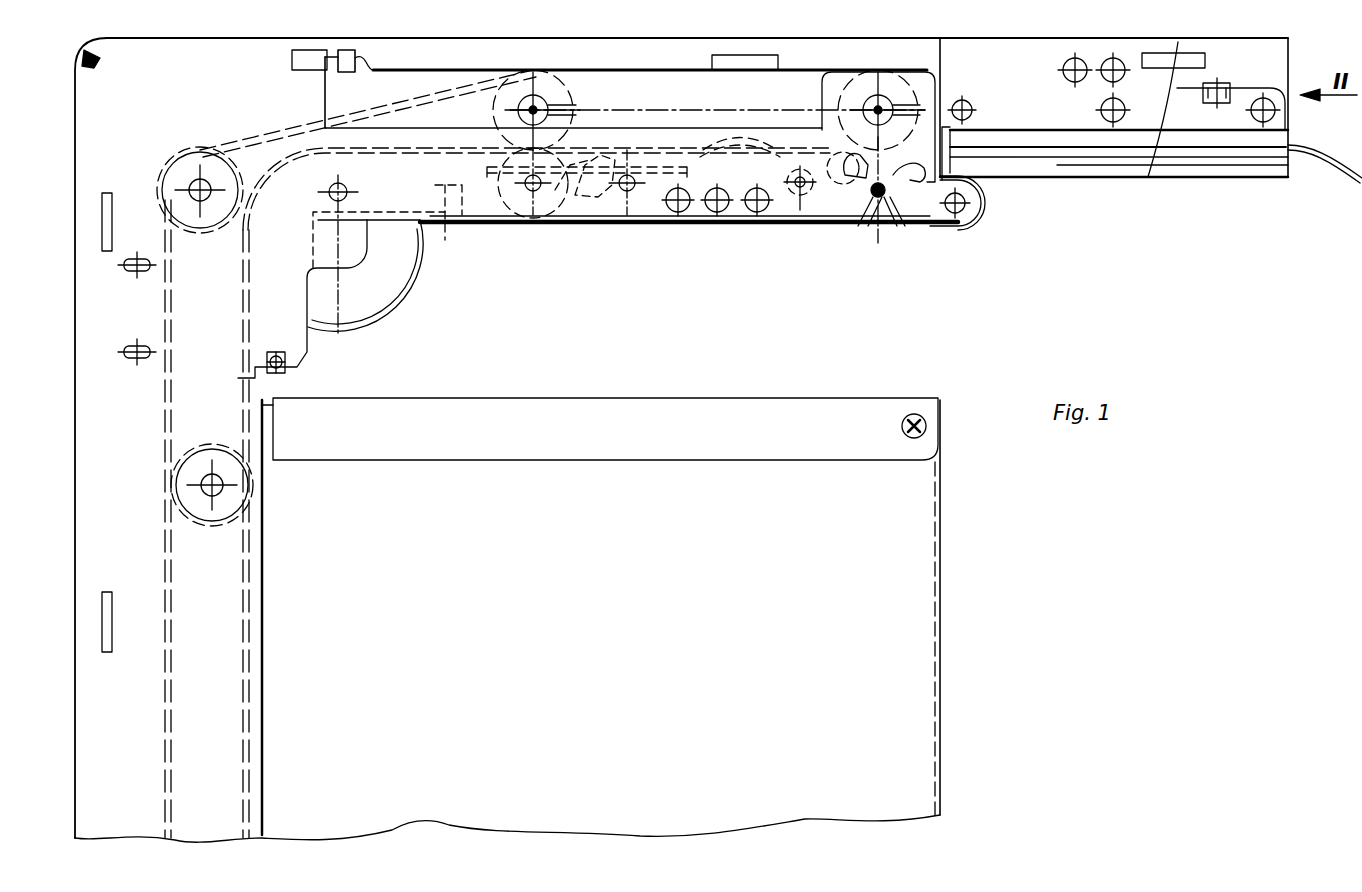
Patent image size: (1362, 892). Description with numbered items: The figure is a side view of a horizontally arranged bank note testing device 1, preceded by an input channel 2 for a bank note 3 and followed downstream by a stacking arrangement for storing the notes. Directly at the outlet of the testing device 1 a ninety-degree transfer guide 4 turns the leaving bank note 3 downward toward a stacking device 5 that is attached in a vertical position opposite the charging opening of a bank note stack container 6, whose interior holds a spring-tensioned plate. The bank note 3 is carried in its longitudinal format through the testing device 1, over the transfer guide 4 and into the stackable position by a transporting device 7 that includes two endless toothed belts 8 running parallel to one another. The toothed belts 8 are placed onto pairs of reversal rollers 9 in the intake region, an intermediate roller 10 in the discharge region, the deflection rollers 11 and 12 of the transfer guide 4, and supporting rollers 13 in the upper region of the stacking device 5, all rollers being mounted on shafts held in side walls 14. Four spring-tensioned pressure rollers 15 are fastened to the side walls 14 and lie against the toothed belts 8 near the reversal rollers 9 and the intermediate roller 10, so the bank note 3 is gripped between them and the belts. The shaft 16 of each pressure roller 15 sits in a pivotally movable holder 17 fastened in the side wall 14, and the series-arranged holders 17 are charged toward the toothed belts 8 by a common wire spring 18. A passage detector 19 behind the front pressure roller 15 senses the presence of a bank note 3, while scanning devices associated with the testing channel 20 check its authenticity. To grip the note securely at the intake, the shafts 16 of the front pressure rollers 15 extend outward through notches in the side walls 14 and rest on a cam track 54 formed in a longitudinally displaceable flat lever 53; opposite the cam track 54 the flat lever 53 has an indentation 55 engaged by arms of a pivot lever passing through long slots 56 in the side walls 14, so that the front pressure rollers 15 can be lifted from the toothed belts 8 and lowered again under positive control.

The bank note testing device 1 is at (736, 275).
The input channel 2 is at (1208, 155).
The bank note 3 is at (1338, 166).
The 90° transfer guide 4 is at (396, 194).
The stacking device 5 is at (212, 690).
The bank note stack container 6 is at (932, 628).
The transporting device 7 is at (190, 120).
The toothed belts 8 is at (250, 138).
The reversal rollers 9 is at (852, 105).
The intermediate roller 10 is at (555, 95).
The deflection roller 11 is at (395, 280).
The deflection roller 12 is at (182, 184).
The supporting rollers 13 is at (190, 497).
The side walls 14 is at (490, 210).
The pressure rollers 15 is at (532, 205).
The shaft 16 is at (873, 185).
The holder 17 is at (607, 190).
The wire spring 18 is at (573, 190).
The passage detector 19 is at (818, 175).
The testing channel 20 is at (705, 155).
The flat lever 53 is at (332, 108).
The cam track 54 is at (905, 172).
The indentation 55 is at (372, 60).
The slots 56 is at (292, 60).